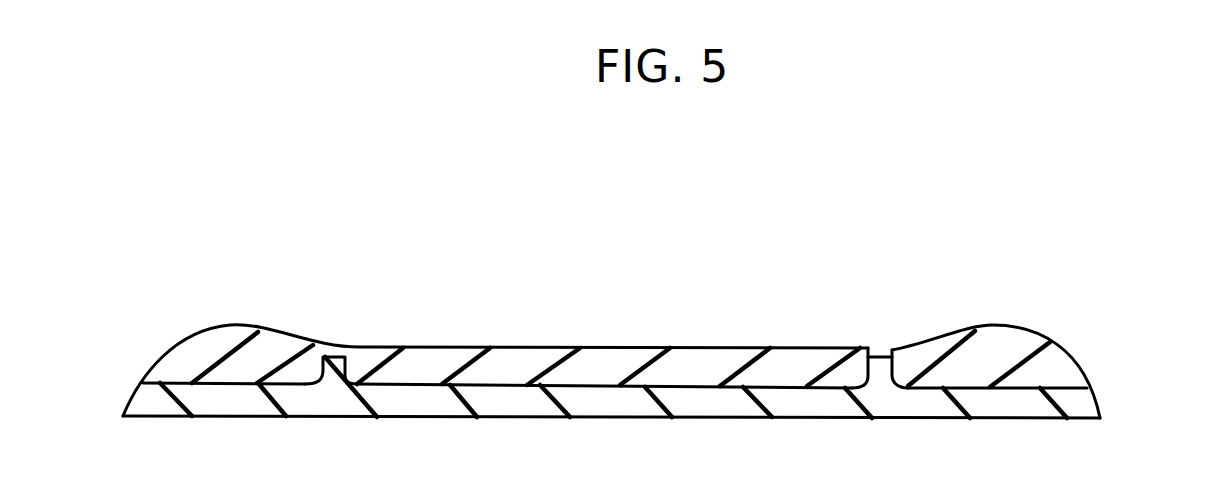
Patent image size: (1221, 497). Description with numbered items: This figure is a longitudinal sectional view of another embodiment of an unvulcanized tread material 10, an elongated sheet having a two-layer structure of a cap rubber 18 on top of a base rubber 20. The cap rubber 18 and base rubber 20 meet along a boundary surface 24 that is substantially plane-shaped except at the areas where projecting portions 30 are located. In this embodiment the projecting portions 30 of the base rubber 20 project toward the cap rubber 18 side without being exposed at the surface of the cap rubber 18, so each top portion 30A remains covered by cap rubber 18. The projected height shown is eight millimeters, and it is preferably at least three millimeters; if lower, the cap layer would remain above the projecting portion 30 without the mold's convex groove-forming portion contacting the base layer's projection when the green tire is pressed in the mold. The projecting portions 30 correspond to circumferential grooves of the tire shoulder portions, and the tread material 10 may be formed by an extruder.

The unvulcanized tread material 10 is at (962, 252).
The cap rubber 18 is at (1028, 347).
The base rubber 20 is at (1082, 404).
The boundary surface 24 is at (982, 387).
The projecting portion 30 is at (346, 360).
The top portion 30A is at (876, 353).